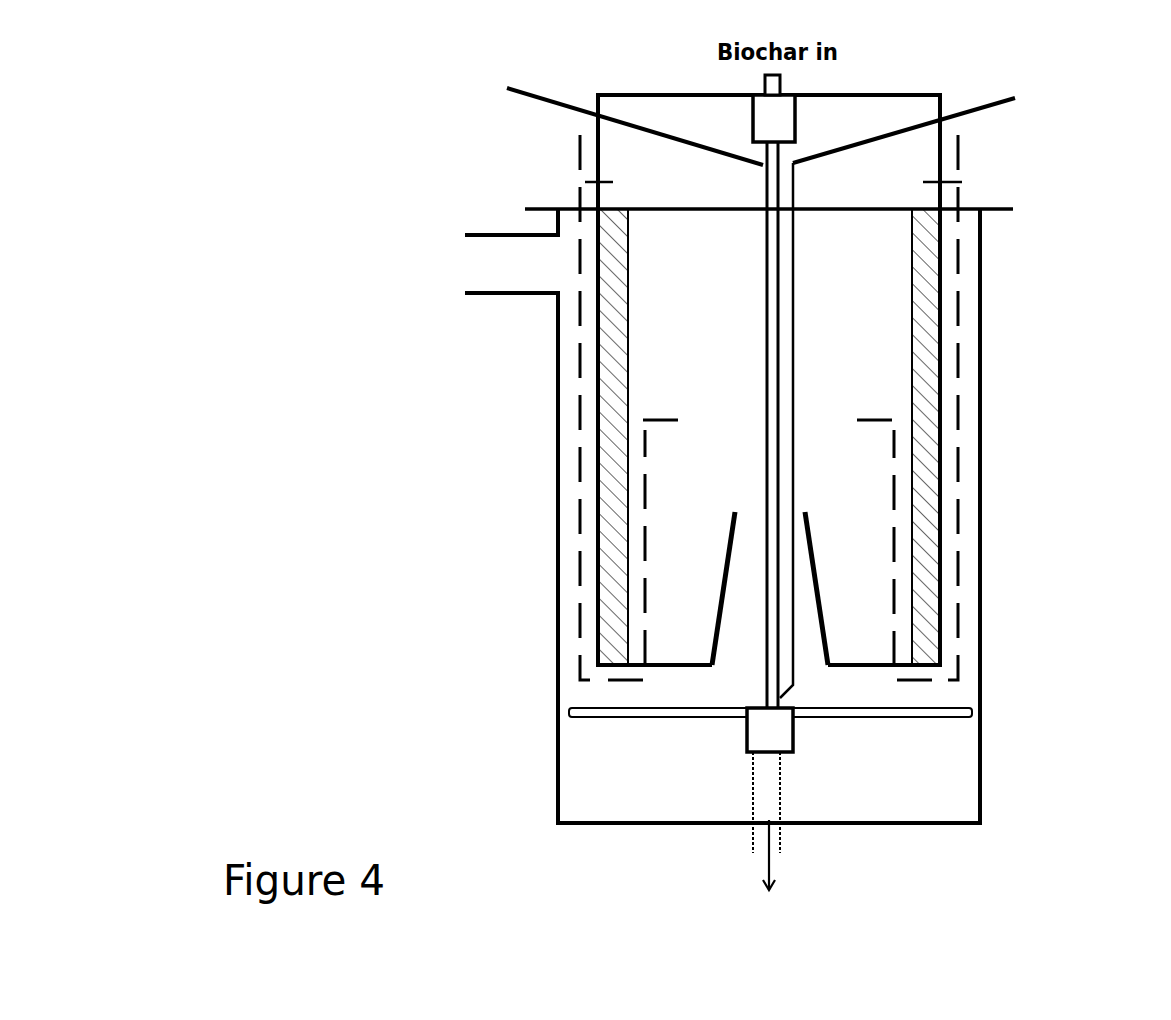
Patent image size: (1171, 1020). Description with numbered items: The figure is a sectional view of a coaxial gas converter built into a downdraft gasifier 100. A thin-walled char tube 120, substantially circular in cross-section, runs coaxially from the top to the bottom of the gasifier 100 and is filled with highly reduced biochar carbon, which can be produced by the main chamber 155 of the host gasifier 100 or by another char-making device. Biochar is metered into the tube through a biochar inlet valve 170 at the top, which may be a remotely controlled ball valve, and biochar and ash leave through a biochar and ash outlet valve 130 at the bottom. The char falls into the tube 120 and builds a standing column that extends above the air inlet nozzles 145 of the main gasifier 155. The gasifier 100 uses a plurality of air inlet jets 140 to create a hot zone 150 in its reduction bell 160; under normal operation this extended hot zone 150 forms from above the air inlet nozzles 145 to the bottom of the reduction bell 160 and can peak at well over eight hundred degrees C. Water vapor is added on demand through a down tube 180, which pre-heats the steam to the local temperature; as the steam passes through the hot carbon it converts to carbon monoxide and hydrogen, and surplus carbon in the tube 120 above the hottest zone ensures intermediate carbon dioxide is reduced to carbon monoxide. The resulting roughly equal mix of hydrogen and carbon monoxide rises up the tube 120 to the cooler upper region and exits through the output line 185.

The downdraft gasifier 100 is at (671, 459).
The coaxial char tube 120 is at (791, 382).
The biochar and ash outlet valve 130 is at (809, 728).
The air inlet jets 140 is at (929, 419).
The air inlet nozzles 145 is at (821, 508).
The hot zone 150 is at (524, 469).
The main chamber 155 is at (991, 266).
The reduction bell 160 is at (524, 592).
The biochar inlet valve 170 is at (822, 108).
The down tube 180 is at (933, 123).
The output line 185 is at (608, 115).